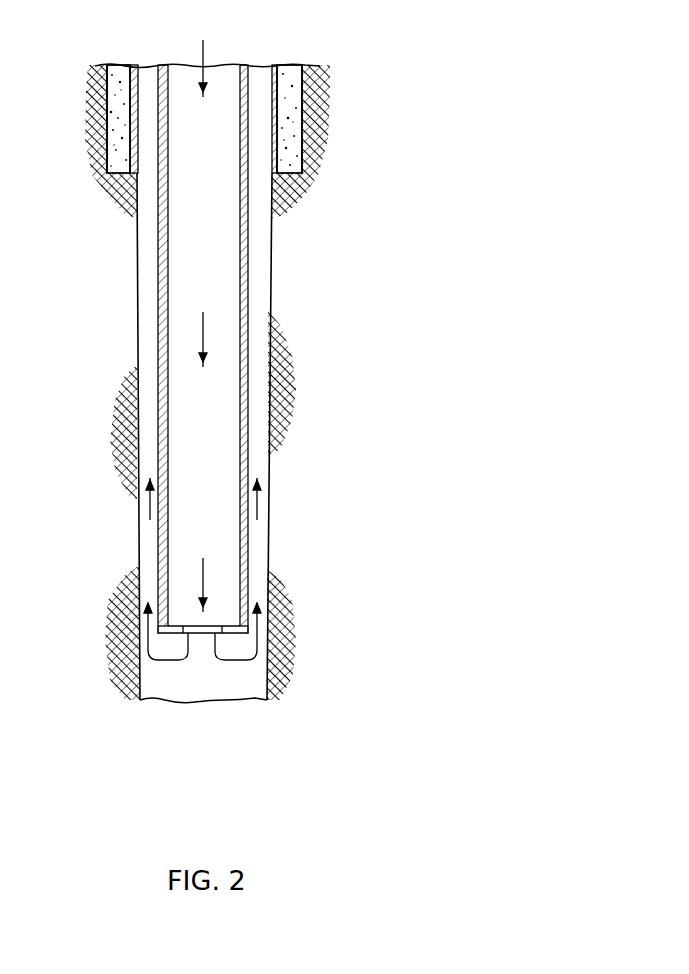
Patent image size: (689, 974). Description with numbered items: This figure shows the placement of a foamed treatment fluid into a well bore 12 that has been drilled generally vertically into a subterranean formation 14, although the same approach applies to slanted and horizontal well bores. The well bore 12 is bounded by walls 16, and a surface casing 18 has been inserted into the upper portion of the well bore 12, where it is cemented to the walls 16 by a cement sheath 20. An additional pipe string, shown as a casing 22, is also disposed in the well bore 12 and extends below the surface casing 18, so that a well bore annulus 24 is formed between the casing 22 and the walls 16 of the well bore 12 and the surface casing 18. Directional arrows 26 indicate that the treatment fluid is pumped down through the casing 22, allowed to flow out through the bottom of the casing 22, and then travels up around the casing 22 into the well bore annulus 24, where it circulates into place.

The well bore 12 is at (272, 527).
The subterranean formation 14 is at (92, 420).
The walls 16 is at (300, 98).
The surface casing 18 is at (275, 150).
The cement sheath 20 is at (292, 120).
The casing 22 is at (158, 293).
The well bore annulus 24 is at (150, 360).
The directional arrows 26 is at (205, 52).